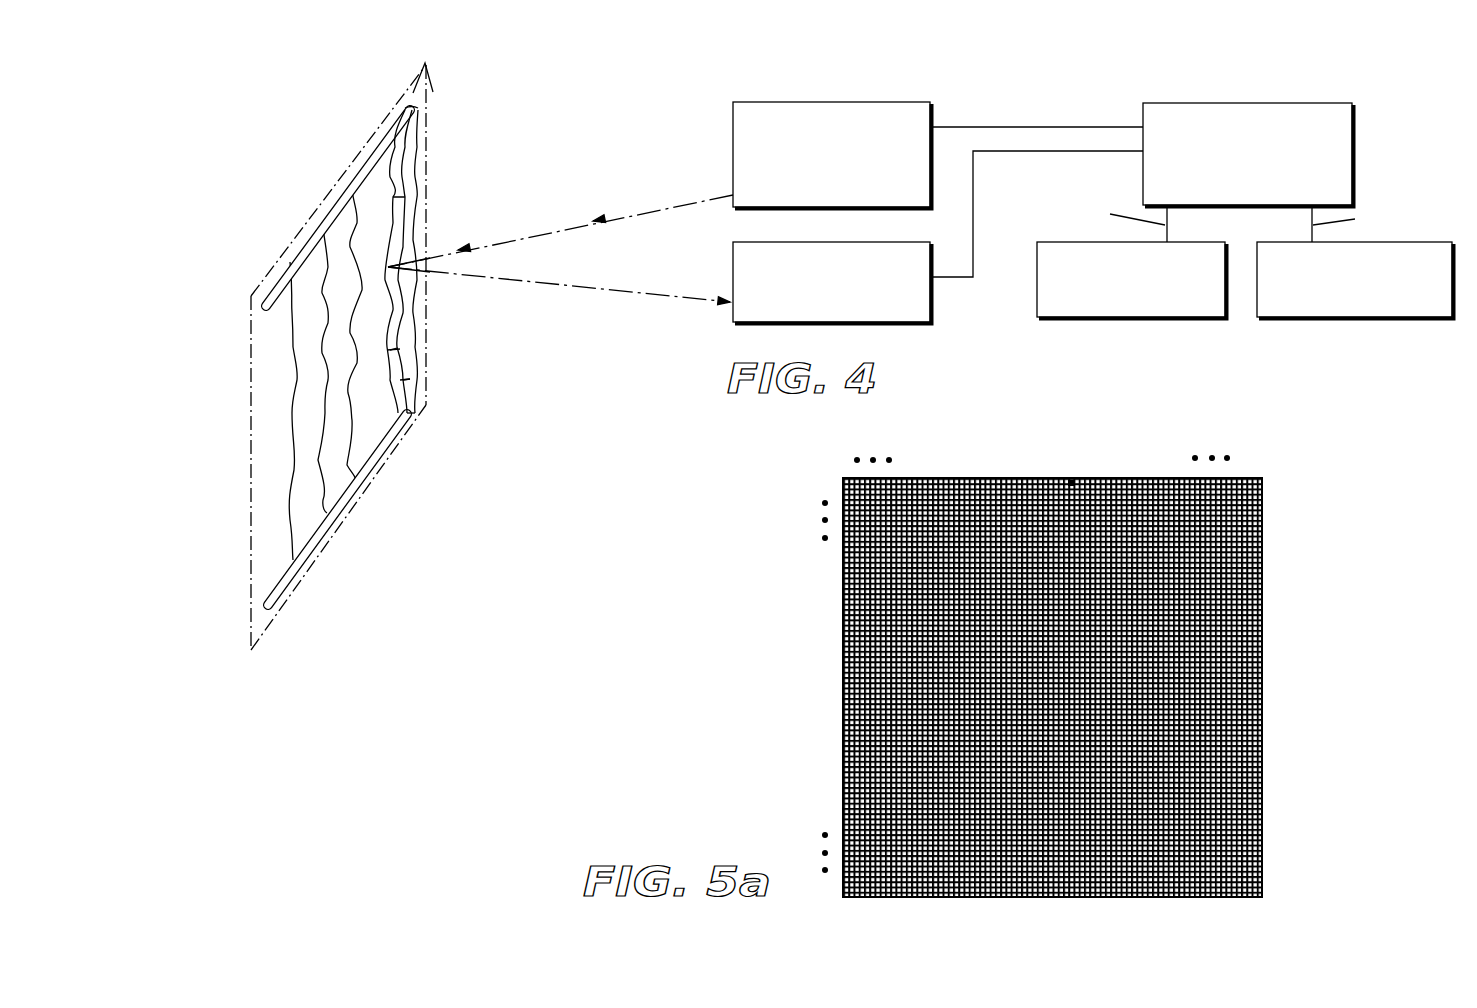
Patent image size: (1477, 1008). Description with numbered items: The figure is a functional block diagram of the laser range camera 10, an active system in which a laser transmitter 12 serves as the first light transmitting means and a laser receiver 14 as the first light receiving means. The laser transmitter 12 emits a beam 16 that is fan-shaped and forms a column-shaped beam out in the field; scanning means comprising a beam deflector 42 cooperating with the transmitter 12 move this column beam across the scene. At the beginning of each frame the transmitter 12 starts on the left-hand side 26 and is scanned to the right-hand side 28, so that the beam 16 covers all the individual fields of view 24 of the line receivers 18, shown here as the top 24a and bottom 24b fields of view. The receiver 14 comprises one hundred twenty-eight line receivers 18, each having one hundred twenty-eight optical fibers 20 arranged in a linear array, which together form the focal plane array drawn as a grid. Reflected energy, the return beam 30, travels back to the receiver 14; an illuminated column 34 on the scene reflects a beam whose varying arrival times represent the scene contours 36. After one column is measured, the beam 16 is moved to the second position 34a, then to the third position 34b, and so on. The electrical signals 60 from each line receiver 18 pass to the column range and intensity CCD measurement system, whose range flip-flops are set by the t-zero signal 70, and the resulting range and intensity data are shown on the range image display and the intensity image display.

In FIG. 4, the laser range camera 10 is at (1380, 93).
In FIG. 4, the laser transmitter 12 is at (849, 142).
In FIG. 4, the beam deflector 42 is at (903, 82).
In FIG. 4, the laser receiver 14 is at (933, 256).
In FIG. 4, the beam 16 is at (604, 203).
In FIG. 4, the return beam 30 is at (610, 292).
In FIG. 4, the electrical signals 60 is at (998, 153).
In FIG. 4, the t-zero signal 70 is at (1097, 125).
In FIG. 4, the field of view 24 is at (358, 97).
In FIG. 4, the top field of view 24a is at (423, 107).
In FIG. 4, the bottom field of view 24b is at (358, 492).
In FIG. 4, the left-hand side 26 is at (208, 302).
In FIG. 4, the right-hand side 28 is at (455, 67).
In FIG. 4, the illuminated column 34 is at (403, 196).
In FIG. 4, the second position 34a is at (410, 386).
In FIG. 4, the third position 34b is at (413, 375).
In FIG. 4, the scene contours 36 is at (400, 349).
In FIG. 5A, the line receivers 18 is at (1066, 671).
In FIG. 5A, the optical fibers 20 is at (1075, 493).